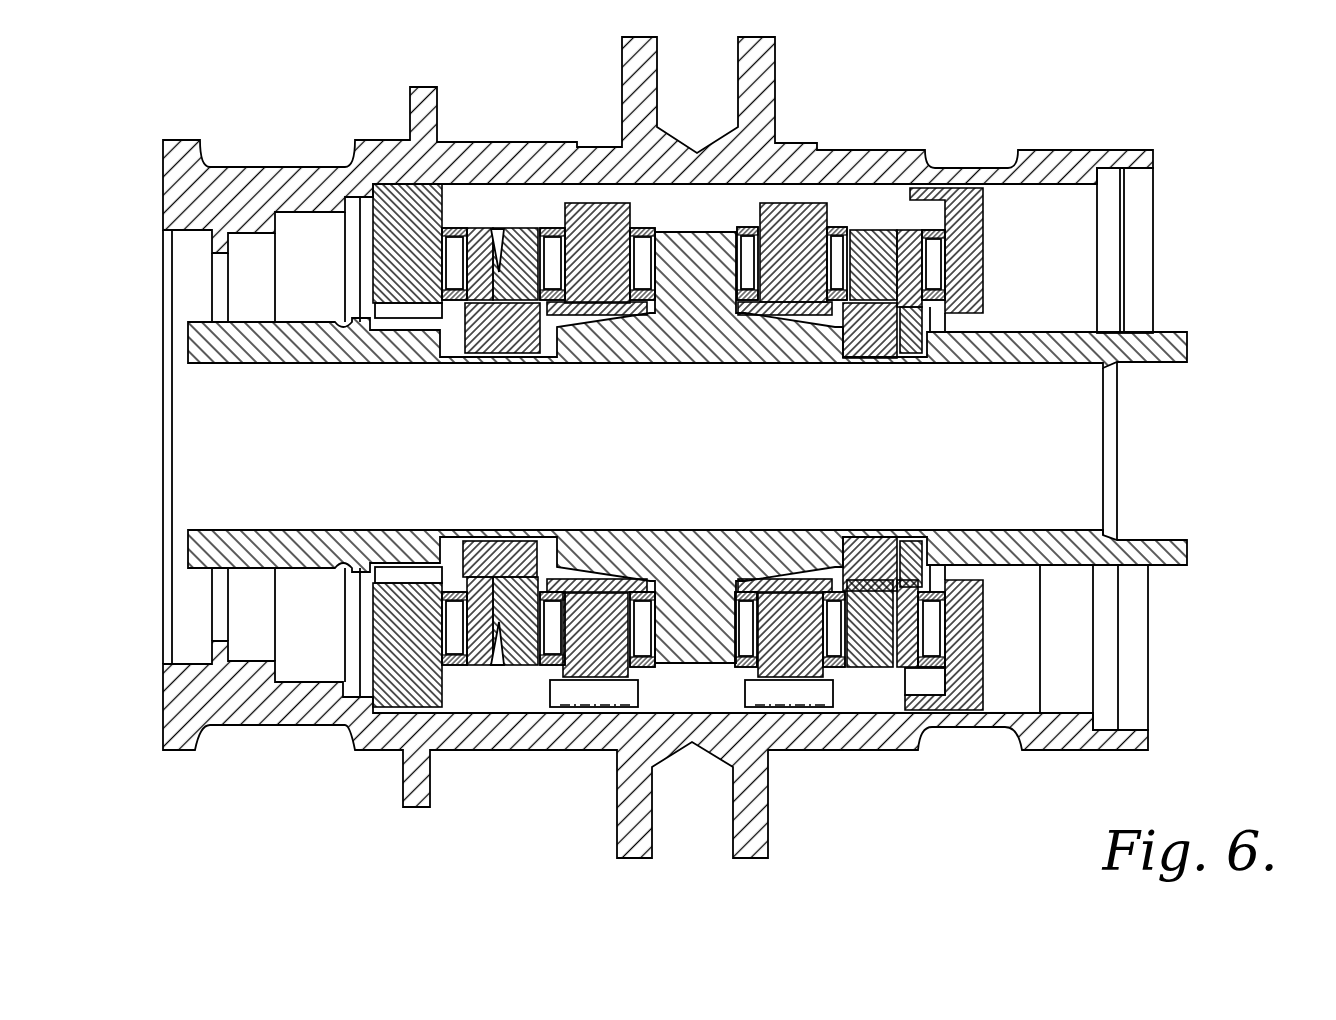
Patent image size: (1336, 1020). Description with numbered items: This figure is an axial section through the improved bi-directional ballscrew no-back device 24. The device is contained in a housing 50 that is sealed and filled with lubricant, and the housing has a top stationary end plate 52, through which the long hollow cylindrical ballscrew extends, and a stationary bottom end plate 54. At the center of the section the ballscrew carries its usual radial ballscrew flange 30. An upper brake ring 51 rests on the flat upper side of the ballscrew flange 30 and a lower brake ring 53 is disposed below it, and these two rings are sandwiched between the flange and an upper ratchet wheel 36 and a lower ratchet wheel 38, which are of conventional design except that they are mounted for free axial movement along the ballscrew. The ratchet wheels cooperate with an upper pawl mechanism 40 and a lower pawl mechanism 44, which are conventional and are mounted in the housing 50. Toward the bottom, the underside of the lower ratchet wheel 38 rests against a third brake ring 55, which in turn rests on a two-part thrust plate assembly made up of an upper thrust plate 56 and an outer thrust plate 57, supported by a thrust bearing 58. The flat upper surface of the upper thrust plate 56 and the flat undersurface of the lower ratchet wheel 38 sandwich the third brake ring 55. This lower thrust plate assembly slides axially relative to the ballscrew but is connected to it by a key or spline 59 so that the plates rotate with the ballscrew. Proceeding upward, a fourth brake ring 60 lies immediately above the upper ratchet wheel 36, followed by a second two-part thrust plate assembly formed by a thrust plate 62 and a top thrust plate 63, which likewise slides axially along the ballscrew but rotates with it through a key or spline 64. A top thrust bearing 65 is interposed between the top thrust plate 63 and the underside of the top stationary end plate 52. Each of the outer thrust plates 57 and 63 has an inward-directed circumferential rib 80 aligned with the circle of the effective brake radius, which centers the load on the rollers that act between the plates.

The bi-directional ballscrew no-back device 24 is at (658, 447).
The ballscrew flange 30 is at (695, 245).
The upper ratchet wheel 36 is at (598, 212).
The lower ratchet wheel 38 is at (797, 210).
The upper pawl mechanism 40 is at (597, 693).
The lower pawl mechanism 44 is at (807, 700).
The housing 50 is at (872, 145).
The upper brake ring 51 is at (645, 228).
The top stationary end plate 52 is at (410, 222).
The lower brake ring 53 is at (752, 230).
The stationary bottom end plate 54 is at (980, 218).
The third brake ring 55 is at (842, 232).
The upper thrust plate 56 is at (878, 293).
The outer thrust plate 57 is at (915, 285).
The thrust bearing 58 is at (930, 228).
The key or spline 59 is at (913, 353).
The fourth brake ring 60 is at (555, 230).
The thrust plate 62 is at (522, 240).
The top thrust plate 63 is at (462, 228).
The key or spline 64 is at (497, 258).
The top thrust bearing 65 is at (452, 302).
The inward-directed circumferential rib 80 is at (490, 230).